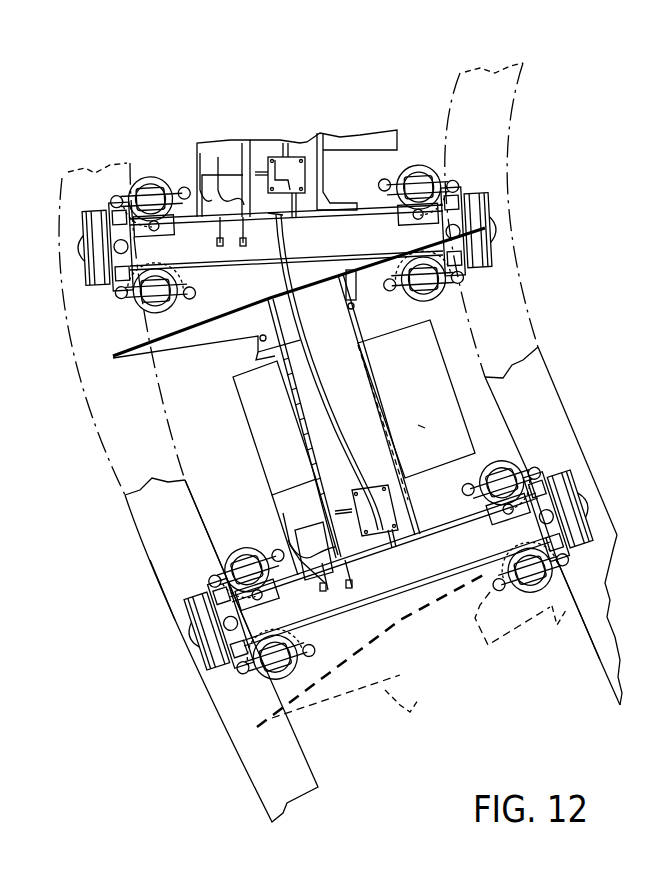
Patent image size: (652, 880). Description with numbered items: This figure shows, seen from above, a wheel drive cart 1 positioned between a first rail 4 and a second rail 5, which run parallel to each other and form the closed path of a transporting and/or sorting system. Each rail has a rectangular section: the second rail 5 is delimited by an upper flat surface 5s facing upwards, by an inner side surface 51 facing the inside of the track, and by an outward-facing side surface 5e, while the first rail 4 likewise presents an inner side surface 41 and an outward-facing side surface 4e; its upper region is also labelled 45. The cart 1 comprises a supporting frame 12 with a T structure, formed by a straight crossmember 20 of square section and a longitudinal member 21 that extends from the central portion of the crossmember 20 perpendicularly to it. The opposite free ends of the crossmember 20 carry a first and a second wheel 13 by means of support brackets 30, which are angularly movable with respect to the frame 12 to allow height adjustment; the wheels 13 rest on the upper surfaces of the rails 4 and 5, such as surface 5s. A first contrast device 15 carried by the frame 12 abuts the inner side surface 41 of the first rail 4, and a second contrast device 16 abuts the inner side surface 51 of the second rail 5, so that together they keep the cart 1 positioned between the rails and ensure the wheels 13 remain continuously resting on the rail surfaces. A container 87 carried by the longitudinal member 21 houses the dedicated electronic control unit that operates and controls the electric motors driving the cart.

The wheel drive cart 1 is at (101, 164).
The first rail 4 is at (573, 412).
The side surface facing outwards 4e is at (615, 518).
The second rail 5 is at (122, 538).
The side surface facing outwards 5e is at (125, 520).
The upper flat surface 5s is at (182, 577).
The supporting frame 12 is at (240, 418).
The wheel 13 is at (193, 662).
The first contrast device 15 is at (480, 580).
The second contrast device 16 is at (322, 632).
The straight crossmember 20 is at (405, 598).
The longitudinal member 21 is at (347, 405).
The bracket 30 is at (223, 678).
The inner side surface 41 is at (580, 631).
The rail top surface 45 is at (527, 407).
The inner side surface 51 is at (207, 510).
The container 87 is at (420, 427).